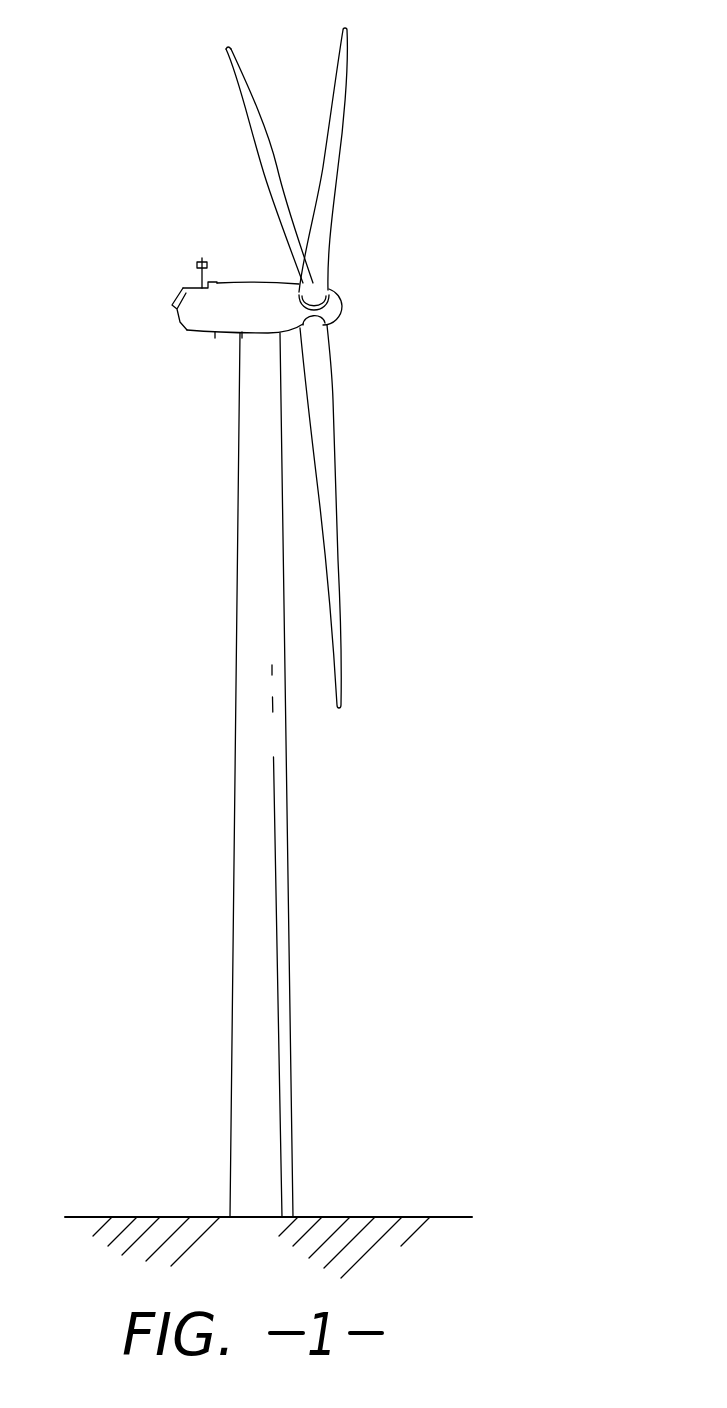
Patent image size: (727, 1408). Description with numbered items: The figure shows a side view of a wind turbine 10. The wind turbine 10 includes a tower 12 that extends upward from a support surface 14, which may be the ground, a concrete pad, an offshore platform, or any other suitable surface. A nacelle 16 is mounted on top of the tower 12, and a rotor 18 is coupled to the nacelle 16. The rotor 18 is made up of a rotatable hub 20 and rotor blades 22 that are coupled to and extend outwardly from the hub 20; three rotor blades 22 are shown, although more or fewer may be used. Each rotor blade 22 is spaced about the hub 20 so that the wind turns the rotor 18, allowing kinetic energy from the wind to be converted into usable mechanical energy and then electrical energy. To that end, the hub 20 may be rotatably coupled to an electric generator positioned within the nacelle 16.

The wind turbine 10 is at (470, 113).
The tower 12 is at (245, 898).
The support surface 14 is at (153, 1217).
The nacelle 16 is at (218, 333).
The rotor 18 is at (348, 276).
The rotatable hub 20 is at (342, 312).
The rotor blade 22 is at (333, 73).